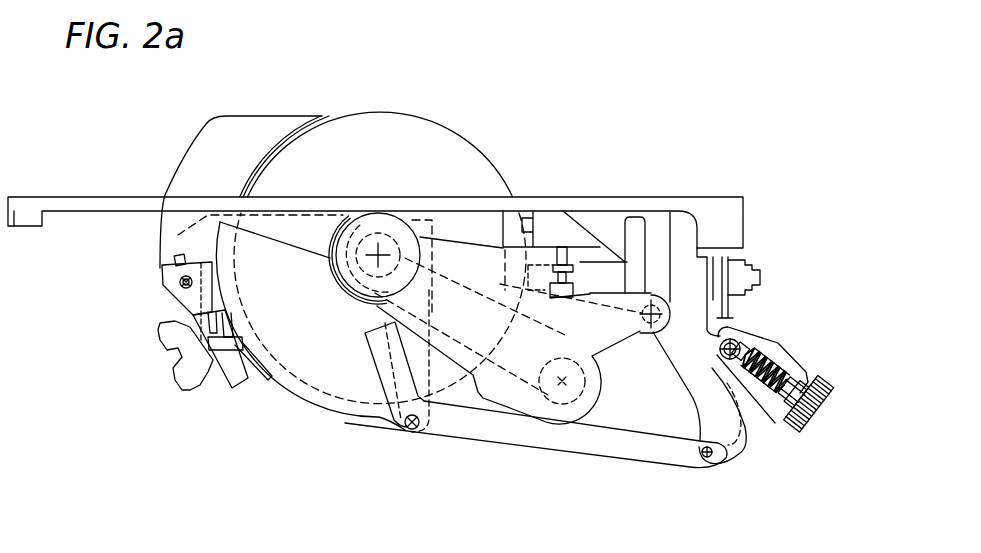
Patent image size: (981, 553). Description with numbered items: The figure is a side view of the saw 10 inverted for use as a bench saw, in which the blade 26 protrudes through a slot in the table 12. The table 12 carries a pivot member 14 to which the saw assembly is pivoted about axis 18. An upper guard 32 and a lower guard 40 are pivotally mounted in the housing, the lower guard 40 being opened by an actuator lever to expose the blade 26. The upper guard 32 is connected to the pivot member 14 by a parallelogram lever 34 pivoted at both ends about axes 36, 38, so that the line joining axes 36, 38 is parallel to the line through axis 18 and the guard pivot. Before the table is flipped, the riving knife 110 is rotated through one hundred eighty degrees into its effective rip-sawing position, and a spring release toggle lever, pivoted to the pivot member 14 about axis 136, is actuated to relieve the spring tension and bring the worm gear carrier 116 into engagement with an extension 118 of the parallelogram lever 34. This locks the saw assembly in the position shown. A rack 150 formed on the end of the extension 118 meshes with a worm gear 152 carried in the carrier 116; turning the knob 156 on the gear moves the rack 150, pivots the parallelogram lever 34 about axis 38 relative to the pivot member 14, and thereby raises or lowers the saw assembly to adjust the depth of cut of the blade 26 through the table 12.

The saw 10 is at (140, 404).
The table 12 is at (98, 194).
The pivot member 14 is at (692, 373).
The axis 18 is at (646, 322).
The blade 26 is at (398, 135).
The upper guard 32 is at (383, 423).
The parallelogram lever 34 is at (493, 437).
The axis 36 is at (415, 430).
The axis 38 is at (703, 460).
The lower guard 40 is at (303, 358).
The riving knife 110 is at (200, 150).
The worm gear carrier 116 is at (794, 368).
The extension 118 is at (740, 452).
The axis 136 is at (719, 349).
The rack 150 is at (780, 405).
The worm gear 152 is at (779, 352).
The knob 156 is at (824, 380).